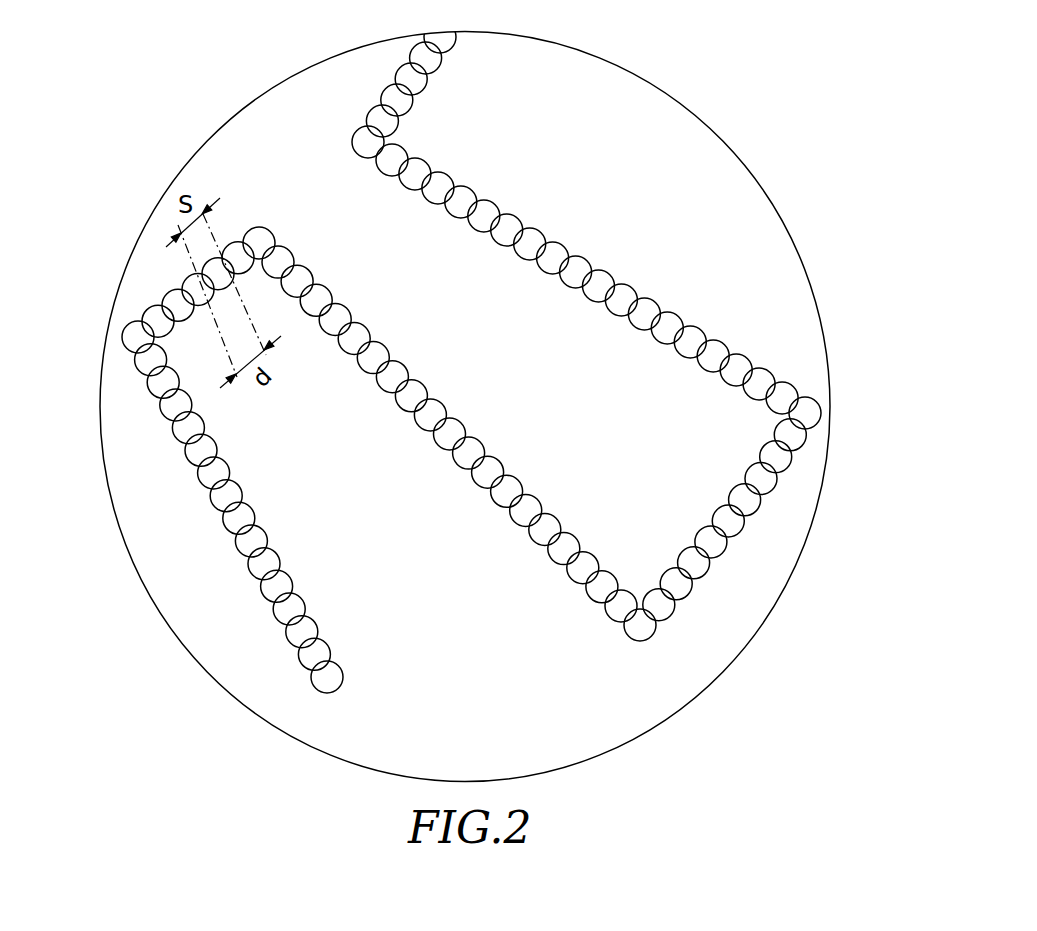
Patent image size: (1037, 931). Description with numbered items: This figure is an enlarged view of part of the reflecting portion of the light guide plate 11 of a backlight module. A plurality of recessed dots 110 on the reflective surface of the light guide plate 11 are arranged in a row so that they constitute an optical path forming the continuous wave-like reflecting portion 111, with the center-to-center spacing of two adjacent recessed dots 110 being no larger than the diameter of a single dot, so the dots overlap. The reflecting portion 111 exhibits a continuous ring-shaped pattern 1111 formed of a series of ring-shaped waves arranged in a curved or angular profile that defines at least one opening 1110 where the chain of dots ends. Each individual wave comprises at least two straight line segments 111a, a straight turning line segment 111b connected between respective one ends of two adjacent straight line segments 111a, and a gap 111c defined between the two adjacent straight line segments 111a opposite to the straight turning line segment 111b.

The light guide plate 11 is at (702, 165).
The recessed dots 110 is at (568, 417).
The continuous wave-like reflecting portion 111 is at (390, 79).
The straight line segments 111a is at (653, 287).
The straight turning line segment 111b is at (743, 550).
The gap 111c is at (347, 200).
The opening 1110 is at (326, 702).
The continuous ring-shaped pattern 1111 is at (695, 286).